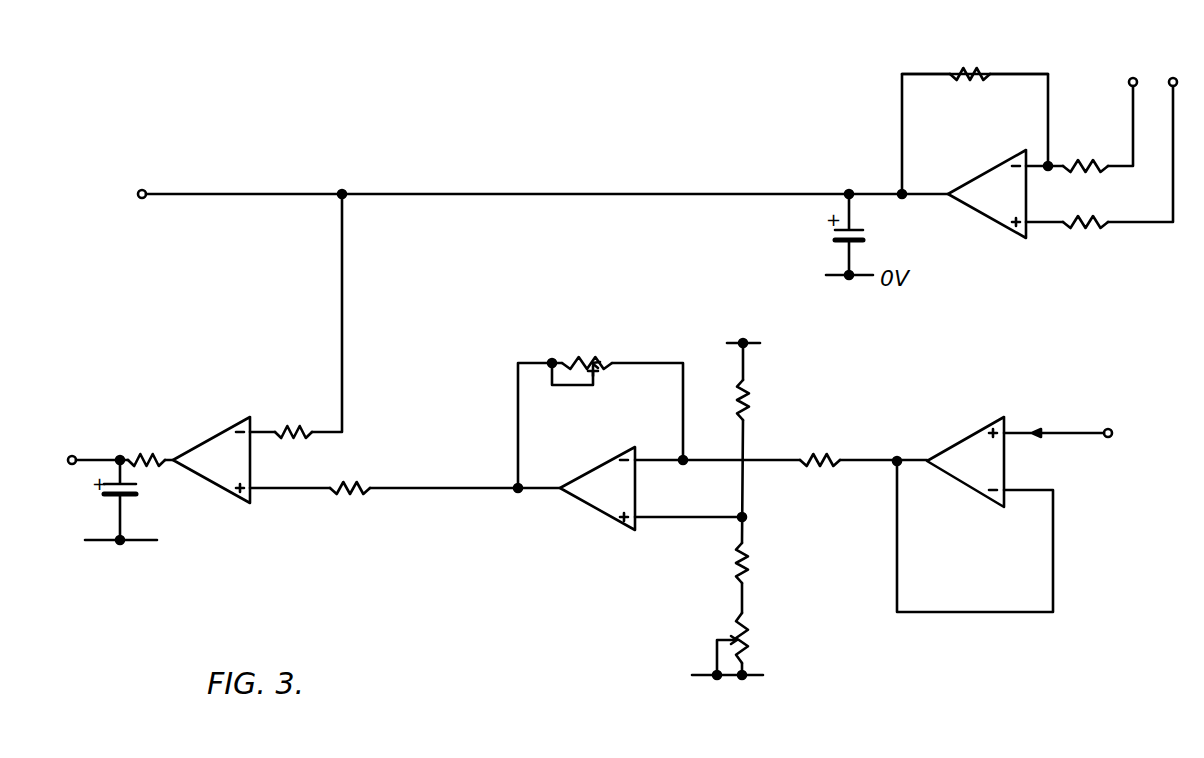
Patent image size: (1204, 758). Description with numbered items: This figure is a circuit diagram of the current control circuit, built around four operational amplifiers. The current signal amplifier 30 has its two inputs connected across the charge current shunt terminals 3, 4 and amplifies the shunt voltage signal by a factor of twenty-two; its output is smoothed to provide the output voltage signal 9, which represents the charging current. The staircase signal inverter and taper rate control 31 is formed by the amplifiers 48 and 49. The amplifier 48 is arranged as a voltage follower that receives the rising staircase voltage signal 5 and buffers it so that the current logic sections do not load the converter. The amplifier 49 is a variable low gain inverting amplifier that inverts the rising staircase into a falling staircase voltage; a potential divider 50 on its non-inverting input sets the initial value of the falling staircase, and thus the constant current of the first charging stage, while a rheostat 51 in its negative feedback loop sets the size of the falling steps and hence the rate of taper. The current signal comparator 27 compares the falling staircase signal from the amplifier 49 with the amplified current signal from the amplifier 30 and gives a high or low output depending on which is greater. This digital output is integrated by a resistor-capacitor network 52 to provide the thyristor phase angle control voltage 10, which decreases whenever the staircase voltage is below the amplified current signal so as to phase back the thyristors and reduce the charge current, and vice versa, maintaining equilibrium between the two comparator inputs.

The output voltage signal 9 is at (137, 194).
The thyristor phase angle control voltage 10 is at (66, 462).
The resistor-capacitor network 52 is at (132, 444).
The current signal comparator 27 is at (208, 440).
The variable low gain inverting amplifier 49 is at (578, 480).
The rheostat 51 is at (598, 367).
The potential divider 50 is at (776, 357).
The voltage follower amplifier 48 is at (953, 459).
The staircase voltage signal 5 is at (1112, 433).
The staircase signal inverter and taper rate control 31 is at (1122, 690).
The current signal amplifier 30 is at (976, 188).
The charge current shunt terminal 4 is at (1128, 80).
The charge current shunt terminal 3 is at (1168, 84).